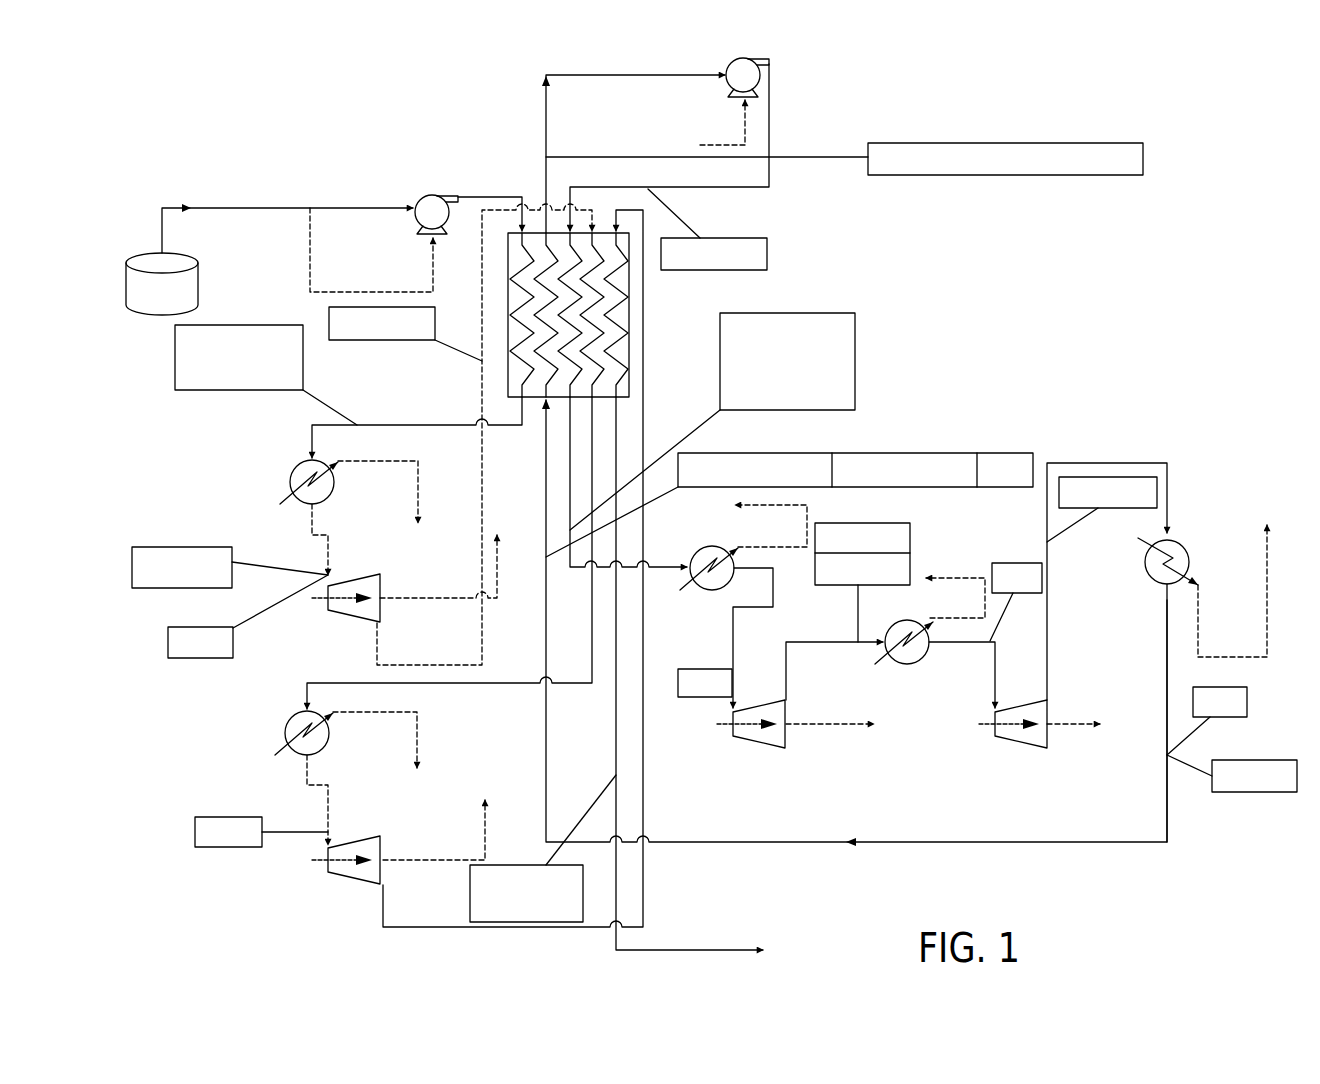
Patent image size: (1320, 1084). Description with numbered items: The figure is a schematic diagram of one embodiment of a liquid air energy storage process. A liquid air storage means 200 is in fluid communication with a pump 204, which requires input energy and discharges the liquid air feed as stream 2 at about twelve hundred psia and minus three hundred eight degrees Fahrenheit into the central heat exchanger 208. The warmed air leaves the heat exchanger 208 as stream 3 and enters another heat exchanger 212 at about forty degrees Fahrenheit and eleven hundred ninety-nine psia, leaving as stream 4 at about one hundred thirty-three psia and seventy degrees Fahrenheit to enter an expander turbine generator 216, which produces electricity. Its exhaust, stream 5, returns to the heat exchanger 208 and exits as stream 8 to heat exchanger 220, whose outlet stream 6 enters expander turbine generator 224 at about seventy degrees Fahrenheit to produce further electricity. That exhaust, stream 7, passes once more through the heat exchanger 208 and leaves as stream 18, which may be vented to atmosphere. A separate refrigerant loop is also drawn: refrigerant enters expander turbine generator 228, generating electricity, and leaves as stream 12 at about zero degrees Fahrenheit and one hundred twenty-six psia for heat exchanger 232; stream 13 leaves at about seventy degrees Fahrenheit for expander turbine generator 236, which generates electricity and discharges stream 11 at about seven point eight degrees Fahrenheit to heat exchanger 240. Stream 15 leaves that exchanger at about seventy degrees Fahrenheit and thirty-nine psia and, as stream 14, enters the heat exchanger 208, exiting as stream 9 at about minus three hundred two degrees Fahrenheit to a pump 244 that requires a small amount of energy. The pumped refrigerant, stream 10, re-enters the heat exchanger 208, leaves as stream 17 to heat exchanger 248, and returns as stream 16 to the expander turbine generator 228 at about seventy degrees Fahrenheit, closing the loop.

The liquid air storage means 200 is at (155, 318).
The pump 204 is at (423, 194).
The heat exchanger 208 is at (629, 348).
The heat exchanger 212 is at (295, 468).
The expander turbine generator 216 is at (367, 576).
The heat exchanger 220 is at (290, 718).
The expander turbine generator 224 is at (328, 873).
The expander turbine generator 228 is at (732, 733).
The heat exchanger 232 is at (890, 630).
The expander turbine generator 236 is at (995, 733).
The heat exchanger 240 is at (1183, 543).
The pump 244 is at (730, 65).
The heat exchanger 248 is at (716, 546).
The stream 2 is at (490, 207).
The stream 3 is at (417, 427).
The stream 4 is at (232, 581).
The stream 5 is at (484, 434).
The stream 6 is at (264, 801).
The stream 7 is at (514, 568).
The stream 8 is at (449, 554).
The stream 9 is at (842, 154).
The stream 10 is at (669, 167).
The stream 11 is at (1102, 581).
The stream 12 is at (848, 611).
The stream 13 is at (985, 635).
The stream 14 is at (854, 622).
The stream 15 is at (1227, 721).
The stream 16 is at (725, 638).
The stream 17 is at (628, 482).
The stream 18 is at (616, 673).